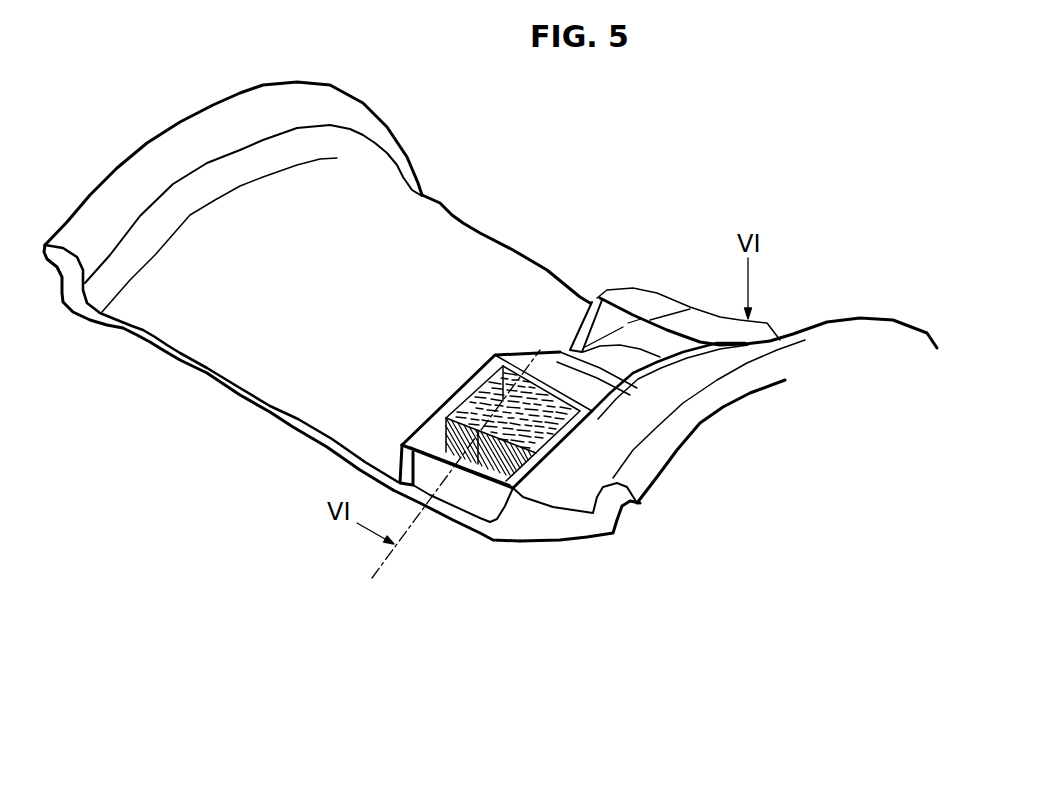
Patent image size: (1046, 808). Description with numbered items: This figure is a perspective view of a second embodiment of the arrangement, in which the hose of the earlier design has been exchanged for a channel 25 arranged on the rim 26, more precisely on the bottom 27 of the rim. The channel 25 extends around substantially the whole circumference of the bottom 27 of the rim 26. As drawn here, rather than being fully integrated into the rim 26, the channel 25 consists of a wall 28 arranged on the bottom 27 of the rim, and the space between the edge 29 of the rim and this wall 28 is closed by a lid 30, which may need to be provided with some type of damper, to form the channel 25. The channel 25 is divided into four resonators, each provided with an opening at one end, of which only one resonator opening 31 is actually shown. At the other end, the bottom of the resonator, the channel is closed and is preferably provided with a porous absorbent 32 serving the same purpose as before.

The channel 25 is at (493, 500).
The rim 26 is at (173, 375).
The bottom of the rim 27 is at (452, 512).
The wall 28 is at (400, 456).
The edge of the rim 29 is at (543, 520).
The lid 30 is at (403, 426).
The resonator opening 31 is at (603, 320).
The porous absorbent 32 is at (590, 410).